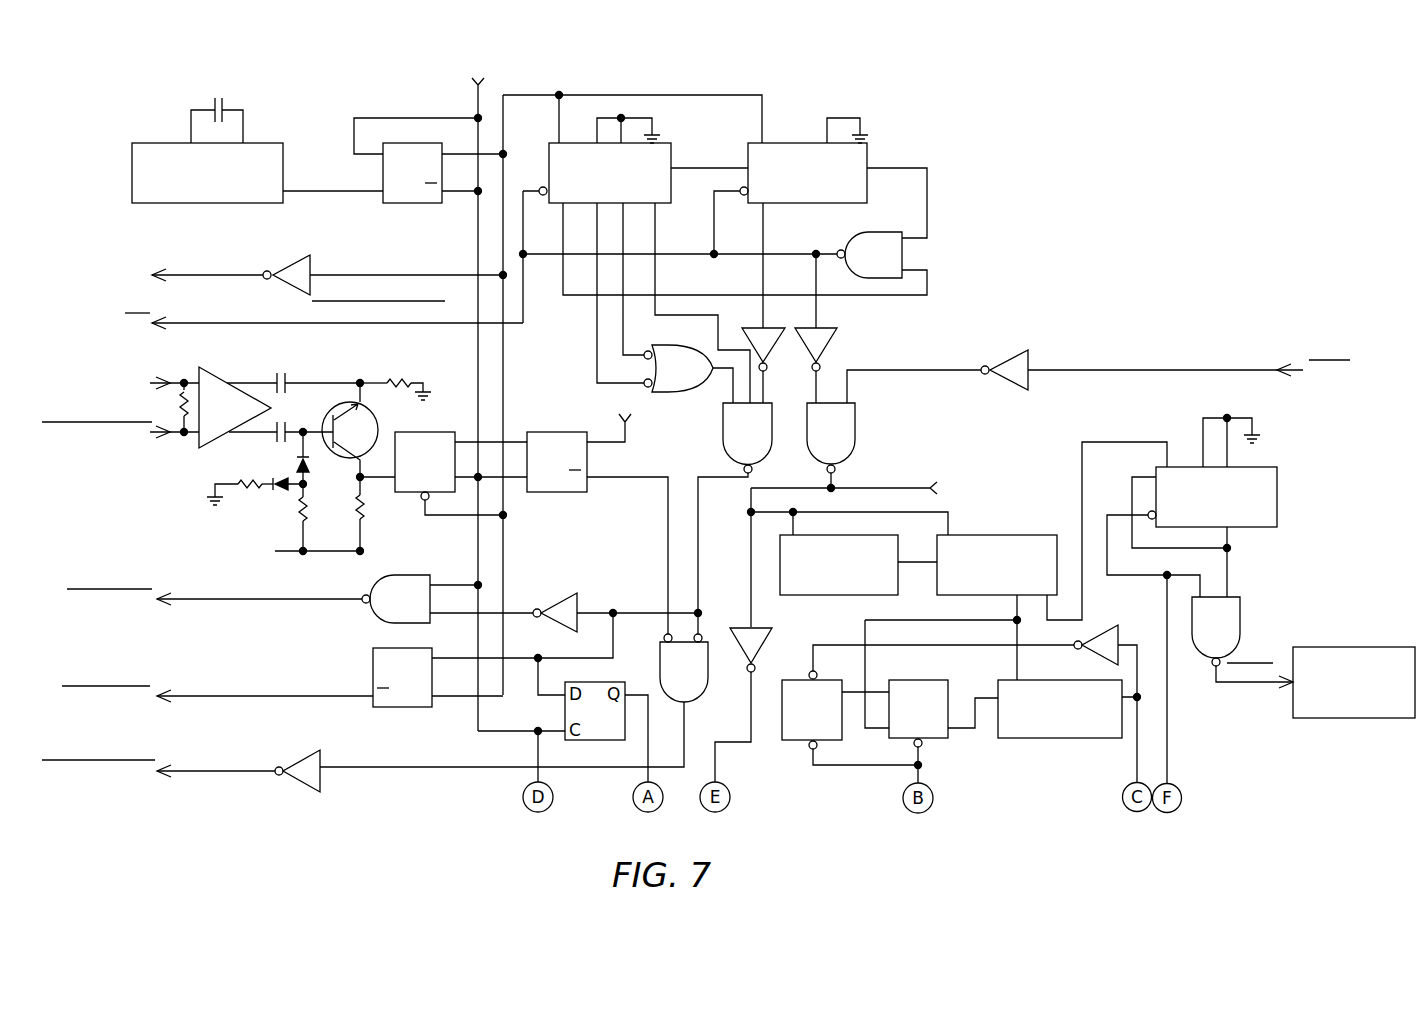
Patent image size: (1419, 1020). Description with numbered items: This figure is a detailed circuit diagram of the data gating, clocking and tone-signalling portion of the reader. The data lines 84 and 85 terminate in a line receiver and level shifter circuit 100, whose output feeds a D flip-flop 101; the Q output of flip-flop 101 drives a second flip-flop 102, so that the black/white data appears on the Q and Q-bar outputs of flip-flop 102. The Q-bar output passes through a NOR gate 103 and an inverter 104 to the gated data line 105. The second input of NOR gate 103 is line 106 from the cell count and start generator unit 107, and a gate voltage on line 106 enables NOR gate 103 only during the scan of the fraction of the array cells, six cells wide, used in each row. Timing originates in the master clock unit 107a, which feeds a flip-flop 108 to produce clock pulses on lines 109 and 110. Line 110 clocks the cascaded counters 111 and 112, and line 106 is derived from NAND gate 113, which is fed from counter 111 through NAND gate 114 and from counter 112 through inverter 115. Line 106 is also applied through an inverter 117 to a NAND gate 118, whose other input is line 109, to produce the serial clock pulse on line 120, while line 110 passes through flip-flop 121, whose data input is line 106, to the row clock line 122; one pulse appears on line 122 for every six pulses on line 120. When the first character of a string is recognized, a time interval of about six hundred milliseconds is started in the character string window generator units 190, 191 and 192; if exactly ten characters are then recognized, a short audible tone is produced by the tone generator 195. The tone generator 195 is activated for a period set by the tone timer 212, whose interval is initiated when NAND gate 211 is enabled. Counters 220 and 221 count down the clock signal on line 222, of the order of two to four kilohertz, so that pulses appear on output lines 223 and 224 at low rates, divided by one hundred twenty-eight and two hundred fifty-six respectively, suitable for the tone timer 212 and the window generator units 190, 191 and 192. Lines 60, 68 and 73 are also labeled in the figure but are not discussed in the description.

The master clock unit 107a is at (148, 143).
The flip-flop 108 is at (418, 204).
The clock pulse line 109 is at (476, 346).
The clock pulse line 110 is at (503, 351).
The A/D CLK output 60 is at (201, 275).
The ST (array start) output 68 is at (215, 323).
The cell count and start generator unit 107 is at (725, 55).
The counter 111 is at (630, 189).
The counter 112 is at (826, 189).
The NAND gate 114 is at (702, 380).
The inverter 115 is at (751, 332).
The NAND gate 113 is at (767, 438).
The clock signal line 222 is at (838, 486).
The EOF (end of frame) input 73 is at (1164, 368).
The gate line 106 is at (742, 576).
The counter 220 is at (858, 581).
The counter 221 is at (1016, 581).
The output line 224 is at (1140, 442).
The tone timer 212 is at (1277, 500).
The NAND gate 211 is at (1235, 632).
The tone generator 195 is at (1350, 647).
The output line 223 is at (1001, 608).
The character string window generator unit 192 is at (823, 729).
The character string window generator unit 191 is at (940, 720).
The character string window generator unit 190 is at (1080, 720).
The data line 84 is at (182, 381).
The data line 85 is at (180, 435).
The line receiver and level shifter circuit 100 is at (333, 365).
The D flip-flop 101 is at (420, 432).
The flip-flop 102 is at (542, 432).
The inverter 117 is at (557, 596).
The NAND gate 118 is at (433, 610).
The serial clock line 120 is at (222, 588).
The flip-flop 121 is at (373, 664).
The row clock line 122 is at (220, 692).
The NOR gate 103 is at (703, 675).
The inverter 104 is at (322, 786).
The gated data line 105 is at (218, 768).